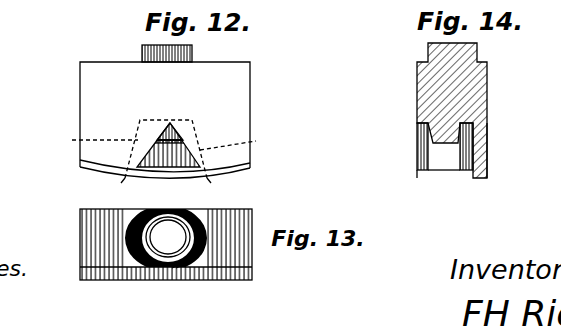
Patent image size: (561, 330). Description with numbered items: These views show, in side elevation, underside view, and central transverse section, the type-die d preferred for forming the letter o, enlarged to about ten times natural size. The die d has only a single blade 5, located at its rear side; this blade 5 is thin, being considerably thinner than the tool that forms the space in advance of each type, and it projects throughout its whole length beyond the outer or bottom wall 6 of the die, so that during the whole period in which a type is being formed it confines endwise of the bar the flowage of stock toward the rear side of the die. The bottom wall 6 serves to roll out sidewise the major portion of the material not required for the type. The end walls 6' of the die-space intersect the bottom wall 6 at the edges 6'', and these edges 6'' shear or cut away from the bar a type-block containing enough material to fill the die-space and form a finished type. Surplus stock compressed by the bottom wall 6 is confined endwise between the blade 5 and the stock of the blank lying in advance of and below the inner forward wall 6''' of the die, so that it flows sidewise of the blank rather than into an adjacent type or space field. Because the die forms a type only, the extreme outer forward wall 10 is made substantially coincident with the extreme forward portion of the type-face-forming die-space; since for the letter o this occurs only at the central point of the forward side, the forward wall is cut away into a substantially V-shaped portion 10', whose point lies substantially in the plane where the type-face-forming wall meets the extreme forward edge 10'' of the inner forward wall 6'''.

In FIG. 12, the type-die d is at (247, 88).
In FIG. 13, the type-die d is at (252, 212).
In FIG. 14, the type-die d is at (480, 107).
In FIG. 12, the blade 5 is at (250, 165).
In FIG. 13, the blade 5 is at (225, 278).
In FIG. 14, the blade 5 is at (487, 153).
In FIG. 12, the bottom wall 6 is at (79, 179).
In FIG. 13, the bottom wall 6 is at (91, 239).
In FIG. 14, the bottom wall 6 is at (410, 187).
In FIG. 12, the end walls of the die-space 6' is at (162, 140).
In FIG. 12, the edges 6'' is at (166, 189).
In FIG. 13, the edges 6'' is at (167, 244).
In FIG. 13, the inner forward wall 6''' is at (168, 237).
In FIG. 14, the inner forward wall 6''' is at (448, 158).
In FIG. 12, the outer forward wall 10 is at (184, 149).
In FIG. 13, the outer forward wall 10 is at (232, 223).
In FIG. 14, the outer forward wall 10 is at (400, 140).
In FIG. 12, the V-shaped portion 10' is at (175, 130).
In FIG. 12, the forward edge of the inner forward wall 10'' is at (168, 117).
In FIG. 13, the forward edge of the inner forward wall 10'' is at (166, 226).